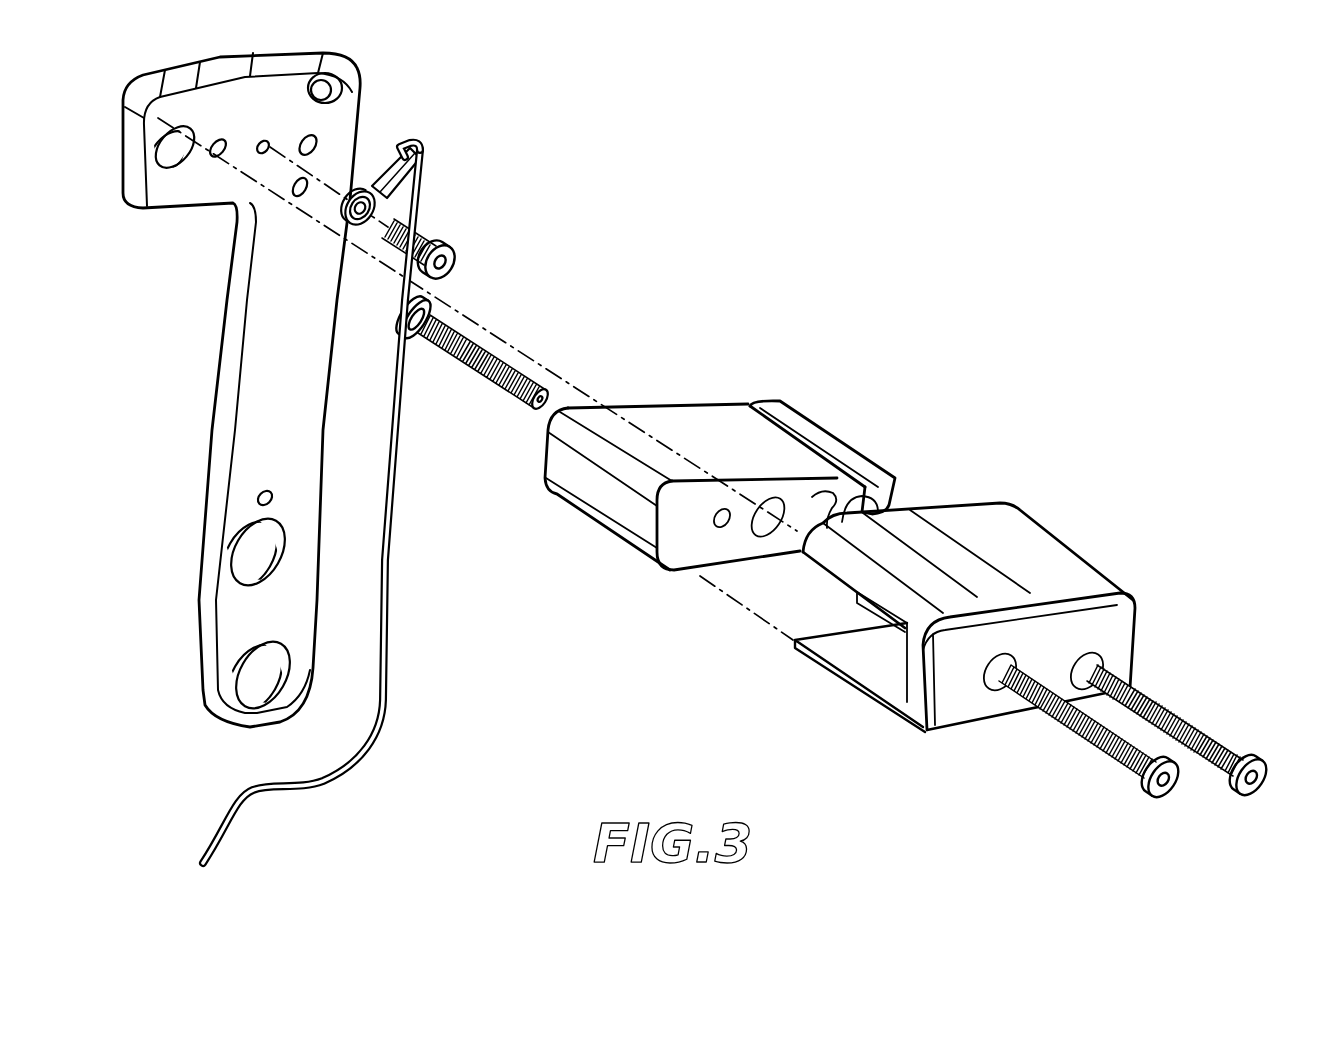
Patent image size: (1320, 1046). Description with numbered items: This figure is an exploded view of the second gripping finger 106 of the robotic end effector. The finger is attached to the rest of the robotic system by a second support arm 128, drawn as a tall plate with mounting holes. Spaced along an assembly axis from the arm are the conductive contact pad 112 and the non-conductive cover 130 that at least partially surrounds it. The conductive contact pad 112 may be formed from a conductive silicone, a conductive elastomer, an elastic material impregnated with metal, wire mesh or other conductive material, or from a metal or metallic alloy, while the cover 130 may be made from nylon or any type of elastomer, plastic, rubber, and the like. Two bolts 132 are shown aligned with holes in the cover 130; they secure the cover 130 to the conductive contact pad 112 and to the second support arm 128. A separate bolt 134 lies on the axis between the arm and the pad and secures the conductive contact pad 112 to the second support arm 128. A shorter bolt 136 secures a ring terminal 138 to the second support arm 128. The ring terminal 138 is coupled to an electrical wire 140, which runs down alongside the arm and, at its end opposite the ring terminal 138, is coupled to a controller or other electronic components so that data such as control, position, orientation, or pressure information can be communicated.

The second gripping finger 106 is at (892, 784).
The conductive contact pad 112 is at (680, 410).
The second support arm 128 is at (225, 401).
The non-conductive cover 130 is at (980, 517).
The bolts 132 is at (1213, 737).
The bolt 134 is at (497, 377).
The bolt 136 is at (446, 252).
The ring terminal 138 is at (400, 196).
The electrical wire 140 is at (377, 727).